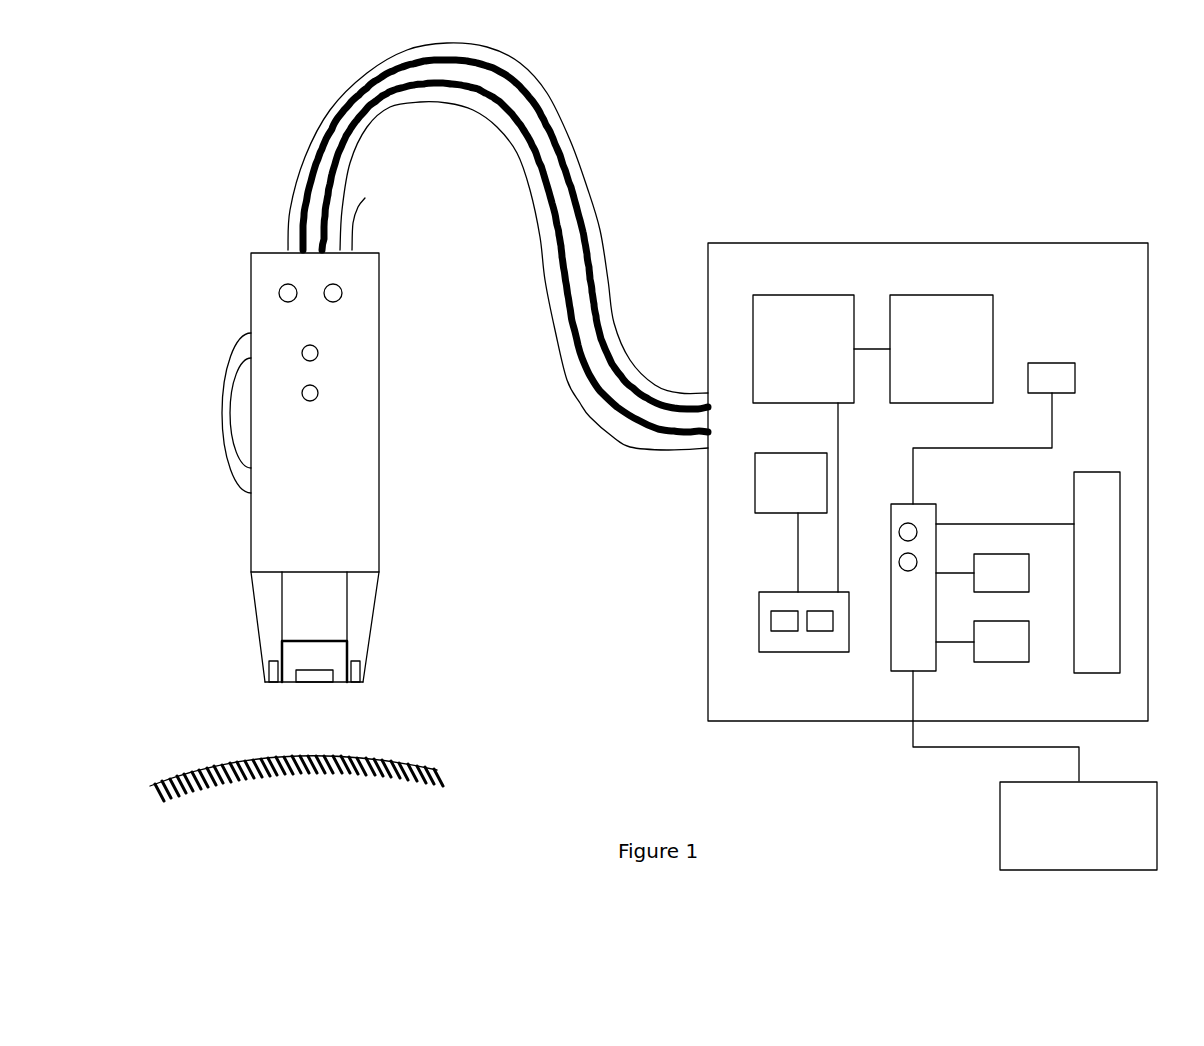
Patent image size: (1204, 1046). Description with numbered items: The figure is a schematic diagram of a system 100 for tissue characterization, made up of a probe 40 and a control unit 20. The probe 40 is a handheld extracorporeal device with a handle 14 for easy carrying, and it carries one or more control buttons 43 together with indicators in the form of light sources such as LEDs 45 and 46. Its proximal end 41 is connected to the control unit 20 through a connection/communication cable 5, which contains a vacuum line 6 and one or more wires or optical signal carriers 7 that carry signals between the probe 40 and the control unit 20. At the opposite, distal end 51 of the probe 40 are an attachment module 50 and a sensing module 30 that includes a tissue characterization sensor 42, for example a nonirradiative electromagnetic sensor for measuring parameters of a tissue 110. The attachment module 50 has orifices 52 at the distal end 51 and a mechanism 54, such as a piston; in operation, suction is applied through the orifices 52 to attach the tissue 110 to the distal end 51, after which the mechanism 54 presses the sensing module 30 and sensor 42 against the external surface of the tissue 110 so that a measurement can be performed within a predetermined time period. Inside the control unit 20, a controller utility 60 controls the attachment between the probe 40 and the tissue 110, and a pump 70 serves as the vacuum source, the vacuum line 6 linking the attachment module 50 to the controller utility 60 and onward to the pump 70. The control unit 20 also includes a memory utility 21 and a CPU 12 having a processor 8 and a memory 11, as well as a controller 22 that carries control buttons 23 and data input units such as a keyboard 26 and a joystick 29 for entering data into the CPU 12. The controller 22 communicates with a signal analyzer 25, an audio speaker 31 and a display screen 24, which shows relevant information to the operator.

The system 100 is at (1044, 100).
The control unit 20 is at (1090, 195).
The probe 40 is at (218, 155).
The connection/communication cable 5 is at (600, 233).
The vacuum line 6 is at (573, 153).
The communication cables 7 is at (587, 383).
The proximal end 41 is at (370, 215).
The control buttons 43 is at (278, 284).
The LED 45 is at (318, 353).
The LED 46 is at (318, 393).
The handle 14 is at (223, 408).
The attachment module 50 is at (377, 593).
The mechanism 54 is at (347, 627).
The sensing module 30 is at (287, 672).
The tissue characterization sensor 42 is at (332, 682).
The orifices 52 is at (268, 673).
The distal end 51 is at (240, 695).
The tissue 110 is at (223, 790).
The controller utility 60 is at (803, 295).
The pump 70 is at (922, 295).
The audio speaker 31 is at (1042, 363).
The memory utility 21 is at (755, 484).
The processor 8 is at (759, 632).
The memory 11 is at (824, 631).
The CPU 12 is at (805, 652).
The controller 22 is at (903, 671).
The control buttons 23 is at (903, 526).
The keyboard 26 is at (1015, 554).
The joystick 29 is at (974, 663).
The signal analyzer 25 is at (1120, 513).
The display screen 24 is at (1157, 810).